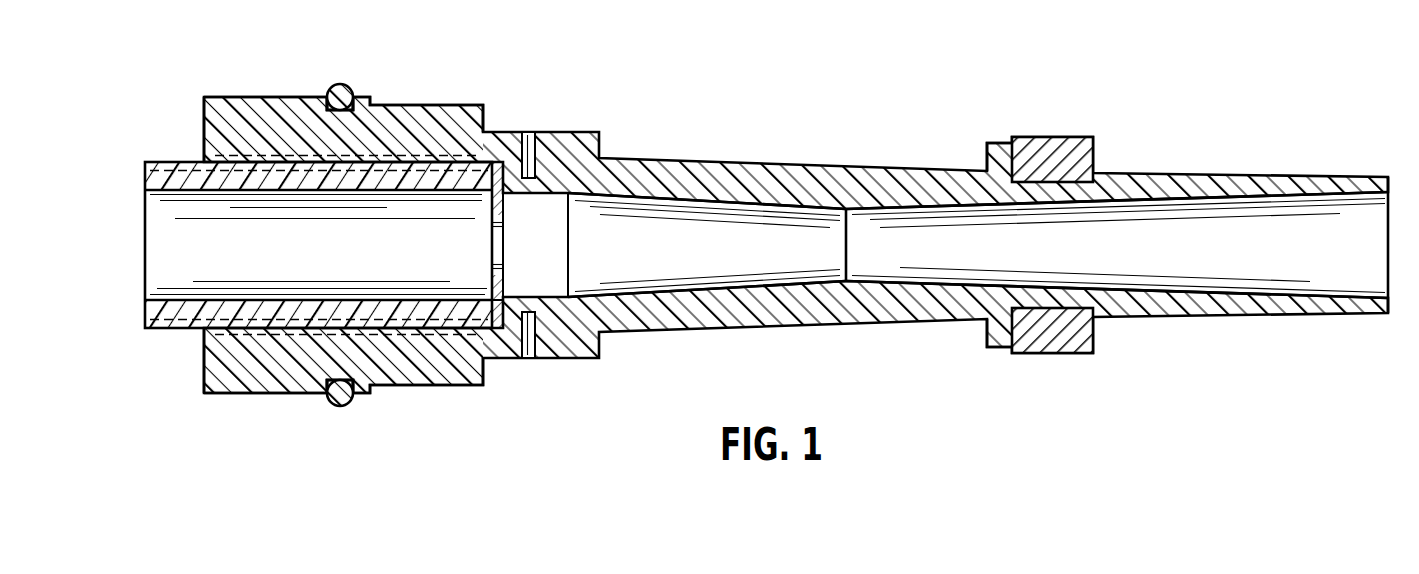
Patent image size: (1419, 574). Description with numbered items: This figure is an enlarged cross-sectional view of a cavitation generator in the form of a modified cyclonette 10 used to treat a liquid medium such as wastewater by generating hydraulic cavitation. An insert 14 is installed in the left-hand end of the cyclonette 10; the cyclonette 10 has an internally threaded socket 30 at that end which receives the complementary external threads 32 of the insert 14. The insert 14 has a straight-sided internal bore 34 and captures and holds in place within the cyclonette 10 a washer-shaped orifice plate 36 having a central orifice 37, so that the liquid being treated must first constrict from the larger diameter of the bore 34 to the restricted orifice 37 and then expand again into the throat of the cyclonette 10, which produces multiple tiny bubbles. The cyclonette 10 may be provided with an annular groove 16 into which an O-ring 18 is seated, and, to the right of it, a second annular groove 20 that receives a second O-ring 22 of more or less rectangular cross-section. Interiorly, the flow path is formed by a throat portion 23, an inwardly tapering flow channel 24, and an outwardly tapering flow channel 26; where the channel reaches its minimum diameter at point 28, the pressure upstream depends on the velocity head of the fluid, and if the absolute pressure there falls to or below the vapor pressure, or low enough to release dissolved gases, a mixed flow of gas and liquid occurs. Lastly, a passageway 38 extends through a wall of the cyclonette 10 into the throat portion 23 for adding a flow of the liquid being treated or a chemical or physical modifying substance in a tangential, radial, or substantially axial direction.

The modified cyclonette 10 is at (747, 120).
The insert 14 is at (140, 177).
The annular groove 16 is at (350, 86).
The O-ring 18 is at (333, 88).
The second annular groove 20 is at (1028, 160).
The second O-ring 22 is at (1040, 137).
The throat portion 23 is at (553, 197).
The inwardly tapering flow channel 24 is at (700, 287).
The outwardly tapering flow channel 26 is at (1140, 292).
The point of minimum diameter 28 is at (846, 247).
The internally threaded socket 30 is at (204, 357).
The external threads 32 is at (165, 333).
The internal bore 34 is at (268, 297).
The orifice plate 36 is at (503, 288).
The central orifice 37 is at (492, 245).
The passageway 38 is at (528, 137).